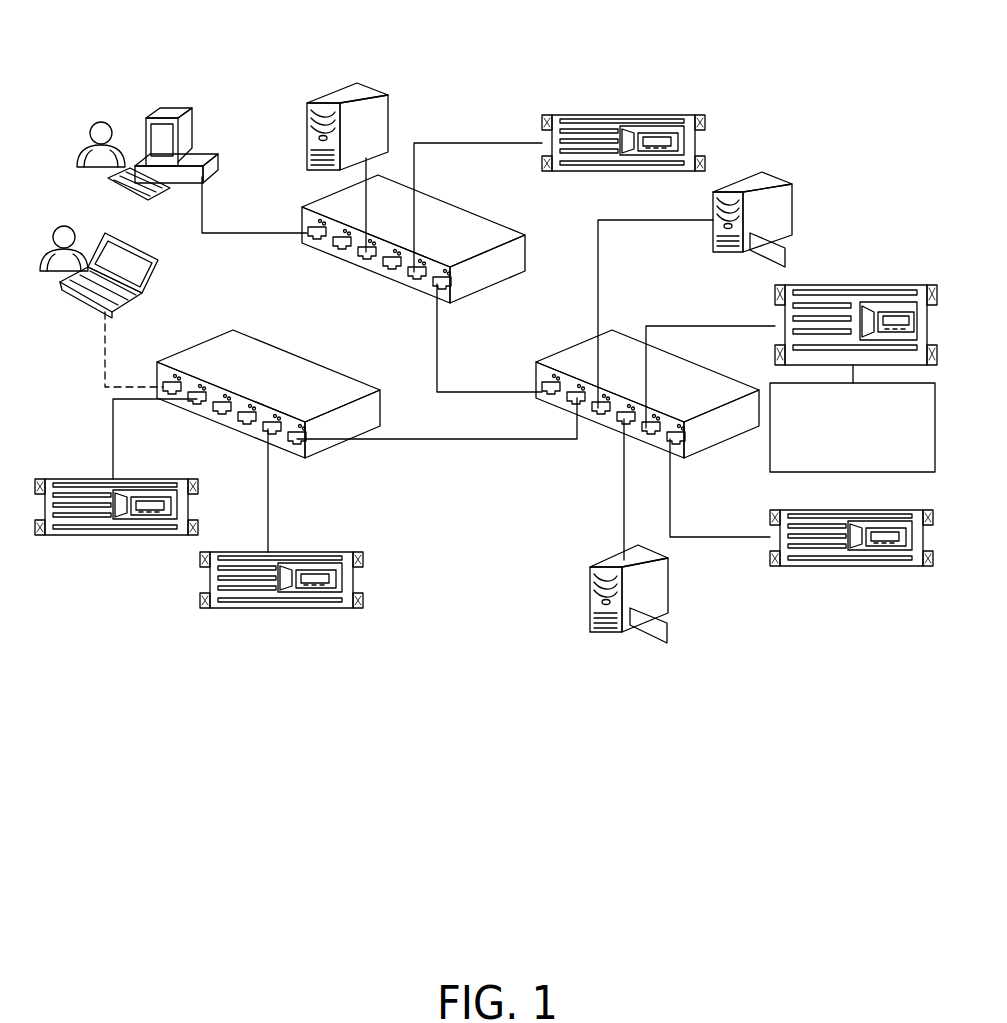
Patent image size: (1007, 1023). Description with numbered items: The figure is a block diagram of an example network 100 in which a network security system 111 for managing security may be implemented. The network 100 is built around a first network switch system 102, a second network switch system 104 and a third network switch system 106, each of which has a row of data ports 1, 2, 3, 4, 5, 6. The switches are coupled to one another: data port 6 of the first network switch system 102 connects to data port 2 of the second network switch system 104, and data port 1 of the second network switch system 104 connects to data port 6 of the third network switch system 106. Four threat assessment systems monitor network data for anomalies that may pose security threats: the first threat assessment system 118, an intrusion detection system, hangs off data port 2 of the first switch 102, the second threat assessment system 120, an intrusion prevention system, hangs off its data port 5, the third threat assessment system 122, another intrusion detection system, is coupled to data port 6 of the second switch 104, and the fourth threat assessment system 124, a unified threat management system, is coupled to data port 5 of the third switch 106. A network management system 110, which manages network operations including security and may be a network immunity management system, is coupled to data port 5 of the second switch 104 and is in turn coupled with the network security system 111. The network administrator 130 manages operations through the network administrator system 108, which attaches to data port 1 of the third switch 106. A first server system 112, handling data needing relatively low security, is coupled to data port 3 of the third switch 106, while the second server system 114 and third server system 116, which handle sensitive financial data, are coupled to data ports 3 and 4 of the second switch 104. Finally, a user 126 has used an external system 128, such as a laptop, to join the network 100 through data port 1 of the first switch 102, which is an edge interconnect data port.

The network 100 is at (810, 66).
The first network switch system 102 is at (338, 386).
The second network switch system 104 is at (672, 368).
The third network switch system 106 is at (465, 225).
The network administrator system 108 is at (192, 140).
The network management system 110 is at (855, 285).
The network security system 111 is at (866, 464).
The first server system 112 is at (377, 110).
The second server system 114 is at (783, 200).
The third server system 116 is at (662, 592).
The first threat assessment system 118 is at (148, 476).
The second threat assessment system 120 is at (295, 552).
The third threat assessment system 122 is at (815, 510).
The fourth threat assessment system 124 is at (598, 115).
The user 126 is at (62, 226).
The external system 128 is at (153, 275).
The network administrator 130 is at (78, 150).
The data port 1 is at (313, 241).
The data port 2 is at (338, 251).
The data port 3 is at (362, 261).
The data port 4 is at (387, 271).
The data port 5 is at (412, 281).
The data port 6 is at (437, 291).